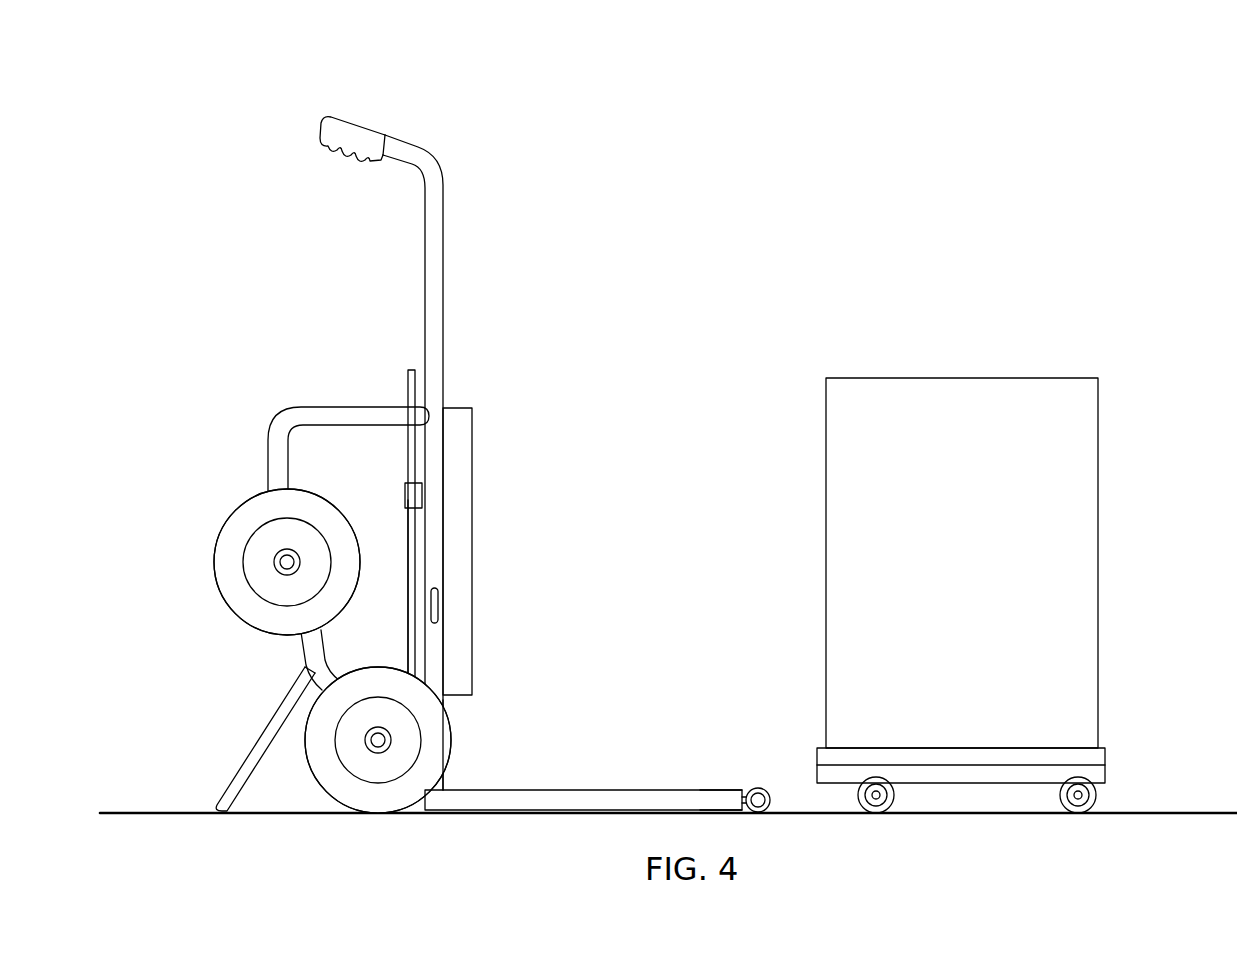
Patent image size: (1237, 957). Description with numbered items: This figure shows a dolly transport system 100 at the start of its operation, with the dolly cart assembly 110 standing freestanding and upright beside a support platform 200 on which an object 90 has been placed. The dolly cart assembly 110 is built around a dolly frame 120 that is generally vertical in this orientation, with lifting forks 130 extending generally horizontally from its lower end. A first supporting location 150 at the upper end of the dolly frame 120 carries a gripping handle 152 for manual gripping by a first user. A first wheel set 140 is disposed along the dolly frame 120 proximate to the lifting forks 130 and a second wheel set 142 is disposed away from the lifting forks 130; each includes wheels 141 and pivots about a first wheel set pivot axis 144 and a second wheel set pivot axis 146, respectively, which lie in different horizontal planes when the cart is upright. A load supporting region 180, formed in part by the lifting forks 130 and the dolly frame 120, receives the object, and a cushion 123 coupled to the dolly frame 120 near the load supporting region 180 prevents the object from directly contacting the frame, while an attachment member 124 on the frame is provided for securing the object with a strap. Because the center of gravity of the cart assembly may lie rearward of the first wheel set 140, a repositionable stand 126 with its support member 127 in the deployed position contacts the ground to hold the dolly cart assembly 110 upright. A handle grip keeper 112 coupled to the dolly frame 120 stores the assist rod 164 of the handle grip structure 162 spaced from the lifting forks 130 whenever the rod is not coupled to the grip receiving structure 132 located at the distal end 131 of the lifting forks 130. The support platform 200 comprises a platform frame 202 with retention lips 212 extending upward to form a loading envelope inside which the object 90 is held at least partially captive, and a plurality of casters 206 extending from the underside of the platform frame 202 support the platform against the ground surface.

The object 90 is at (990, 378).
The dolly transport system 100 is at (846, 118).
The dolly cart assembly 110 is at (530, 160).
The handle grip keeper 112 is at (405, 494).
The dolly frame 120 is at (265, 432).
The cushion 123 is at (472, 494).
The attachment member 124 is at (440, 604).
The repositionable stand 126 is at (262, 735).
The support member 127 is at (292, 712).
The lifting forks 130 is at (560, 790).
The distal end 131 is at (684, 790).
The grip receiving structure 132 is at (760, 788).
The first wheel set 140 is at (310, 775).
The wheel 141 is at (262, 535).
The second wheel set 142 is at (216, 556).
The first wheel set pivot axis 144 is at (382, 740).
The second wheel set pivot axis 146 is at (283, 567).
The first supporting location 150 is at (300, 112).
The gripping handle 152 is at (370, 129).
The handle grip structure 162 is at (404, 374).
The assist rod 164 is at (408, 458).
The load supporting region 180 is at (538, 686).
The support platform 200 is at (1115, 752).
The platform frame 202 is at (985, 738).
The caster 206 is at (875, 813).
The retention lip 212 is at (890, 748).